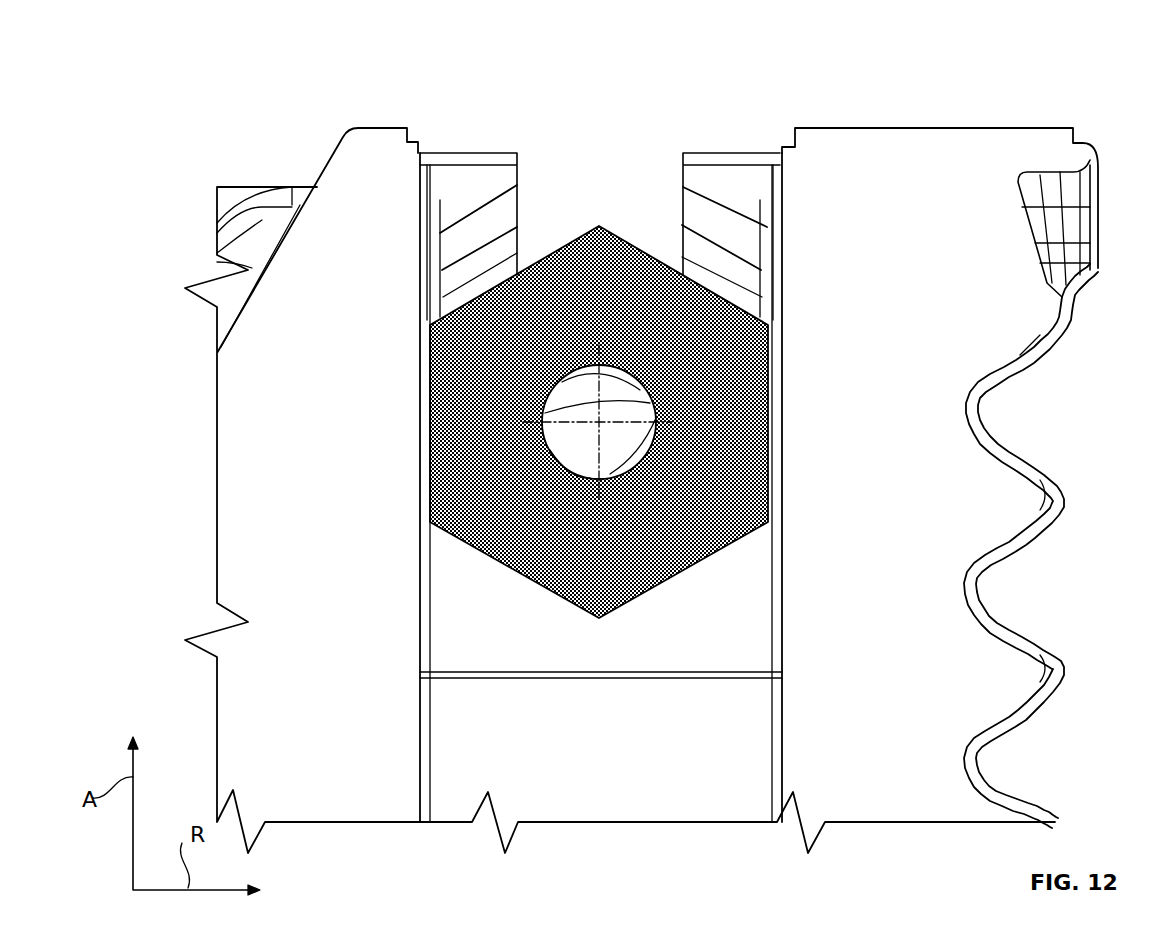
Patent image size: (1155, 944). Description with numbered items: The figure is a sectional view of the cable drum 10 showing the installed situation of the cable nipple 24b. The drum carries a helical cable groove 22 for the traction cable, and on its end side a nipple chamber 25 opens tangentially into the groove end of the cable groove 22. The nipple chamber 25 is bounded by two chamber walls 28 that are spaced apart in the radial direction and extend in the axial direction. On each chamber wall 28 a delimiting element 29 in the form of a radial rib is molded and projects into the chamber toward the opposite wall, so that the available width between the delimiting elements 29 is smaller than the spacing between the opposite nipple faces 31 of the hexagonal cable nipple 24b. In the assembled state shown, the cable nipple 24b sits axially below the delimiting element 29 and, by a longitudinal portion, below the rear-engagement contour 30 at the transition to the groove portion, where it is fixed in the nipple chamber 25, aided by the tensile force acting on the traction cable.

The cable drum 10 is at (333, 165).
The cable groove 22 is at (972, 410).
The cable nipple 24b is at (687, 523).
The nipple chamber 25 is at (505, 632).
The chamber walls 28 is at (423, 492).
The delimiting element 29 is at (442, 250).
The rear-engagement contour 30 is at (690, 217).
The nipple faces 31 is at (423, 408).